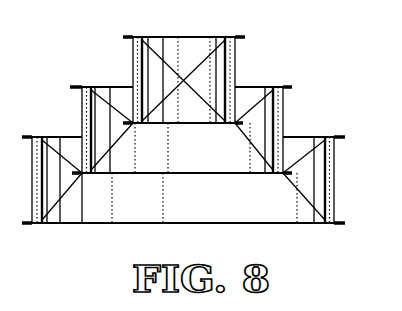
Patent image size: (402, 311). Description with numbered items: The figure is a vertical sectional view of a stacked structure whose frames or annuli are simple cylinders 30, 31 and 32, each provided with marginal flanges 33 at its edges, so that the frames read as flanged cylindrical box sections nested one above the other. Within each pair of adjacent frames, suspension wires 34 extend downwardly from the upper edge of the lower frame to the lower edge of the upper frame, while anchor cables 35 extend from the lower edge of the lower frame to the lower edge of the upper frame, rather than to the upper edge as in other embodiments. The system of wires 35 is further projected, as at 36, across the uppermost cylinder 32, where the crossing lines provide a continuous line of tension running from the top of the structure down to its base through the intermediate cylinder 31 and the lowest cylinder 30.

The cylinder 30 is at (336, 188).
The cylinder 31 is at (286, 126).
The cylinder 32 is at (237, 78).
The marginal flange 33 is at (244, 36).
The suspension wire 34 is at (246, 113).
The anchor cable 35 is at (256, 150).
The projection of the wire system 36 is at (171, 73).